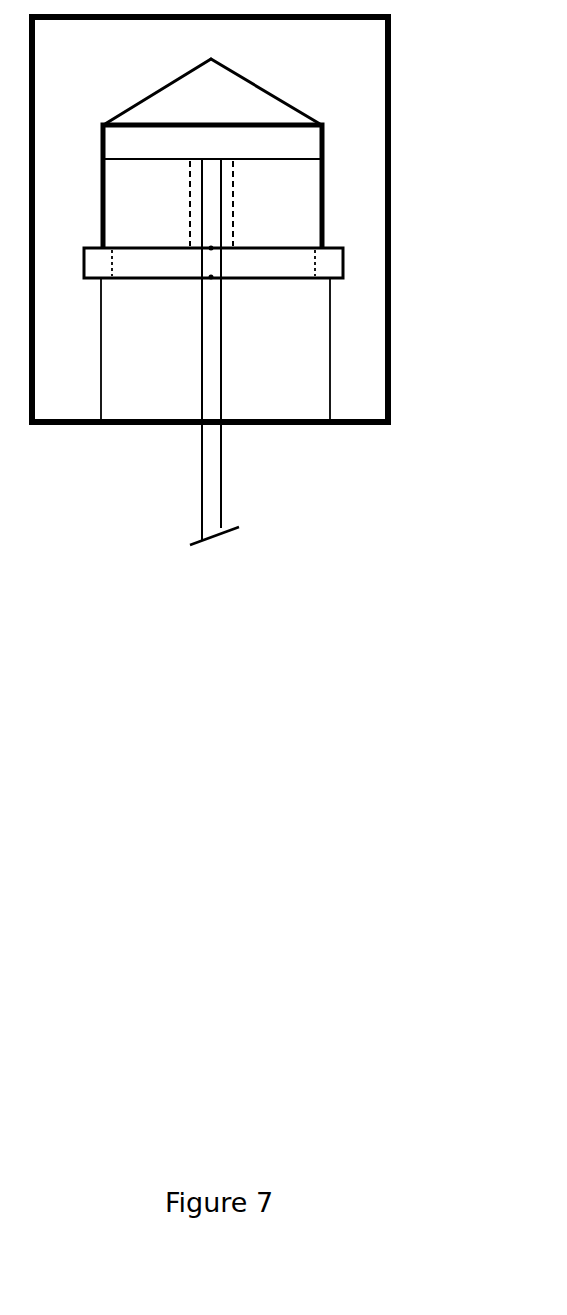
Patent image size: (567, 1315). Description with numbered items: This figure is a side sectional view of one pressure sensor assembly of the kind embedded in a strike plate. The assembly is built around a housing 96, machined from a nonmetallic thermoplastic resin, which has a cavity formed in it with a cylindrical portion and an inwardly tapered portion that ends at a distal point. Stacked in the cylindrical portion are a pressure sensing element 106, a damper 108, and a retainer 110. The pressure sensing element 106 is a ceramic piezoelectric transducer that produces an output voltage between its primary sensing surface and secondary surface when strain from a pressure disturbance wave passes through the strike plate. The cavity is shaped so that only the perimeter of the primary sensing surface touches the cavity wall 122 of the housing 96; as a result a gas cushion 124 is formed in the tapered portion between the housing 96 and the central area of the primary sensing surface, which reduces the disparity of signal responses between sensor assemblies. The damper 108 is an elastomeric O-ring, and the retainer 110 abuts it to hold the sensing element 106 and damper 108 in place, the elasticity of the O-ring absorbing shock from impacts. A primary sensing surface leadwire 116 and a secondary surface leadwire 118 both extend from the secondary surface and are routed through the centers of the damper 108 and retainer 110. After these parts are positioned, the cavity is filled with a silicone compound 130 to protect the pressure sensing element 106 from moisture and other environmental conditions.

The housing 96 is at (210, 42).
The pressure sensing element 106 is at (305, 143).
The damper 108 is at (305, 202).
The retainer 110 is at (330, 262).
The primary sensing surface leadwire 116 is at (177, 349).
The secondary surface leadwire 118 is at (231, 352).
The cavity wall 122 is at (210, 219).
The gas cushion 124 is at (212, 91).
The silicone compound 130 is at (215, 348).